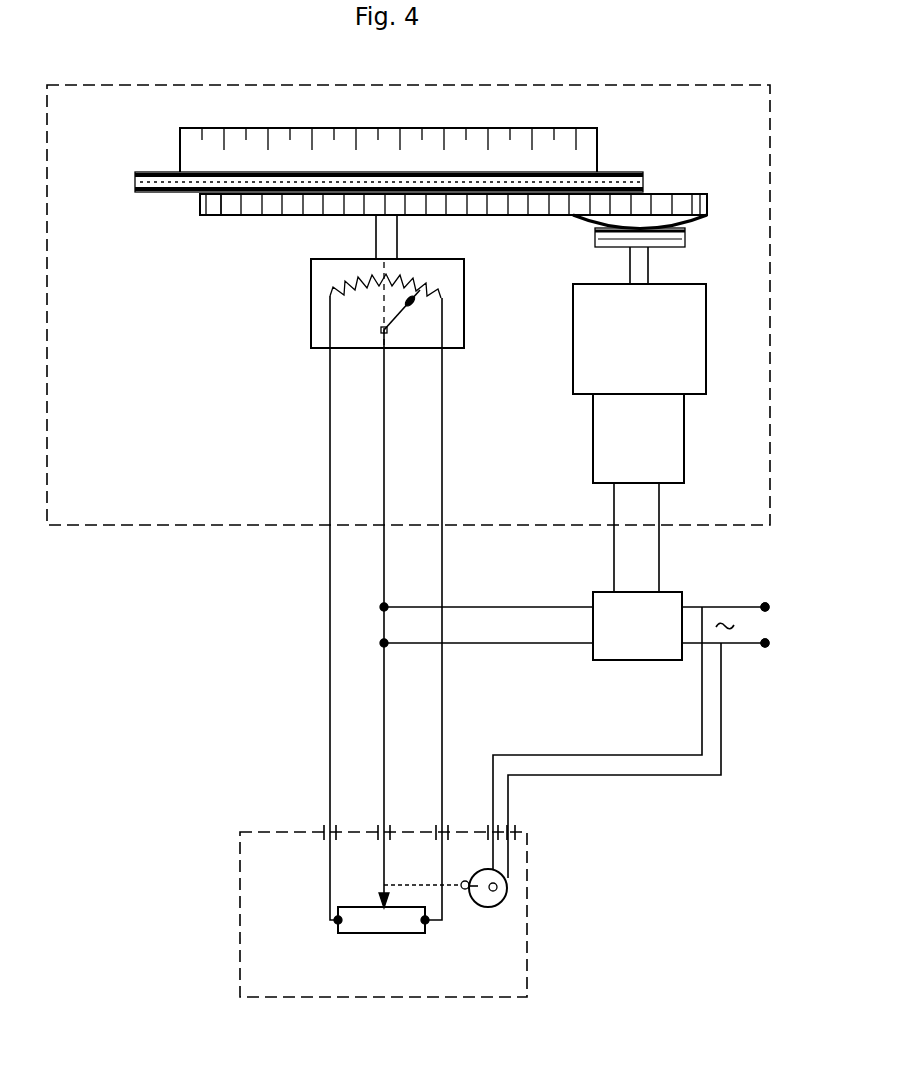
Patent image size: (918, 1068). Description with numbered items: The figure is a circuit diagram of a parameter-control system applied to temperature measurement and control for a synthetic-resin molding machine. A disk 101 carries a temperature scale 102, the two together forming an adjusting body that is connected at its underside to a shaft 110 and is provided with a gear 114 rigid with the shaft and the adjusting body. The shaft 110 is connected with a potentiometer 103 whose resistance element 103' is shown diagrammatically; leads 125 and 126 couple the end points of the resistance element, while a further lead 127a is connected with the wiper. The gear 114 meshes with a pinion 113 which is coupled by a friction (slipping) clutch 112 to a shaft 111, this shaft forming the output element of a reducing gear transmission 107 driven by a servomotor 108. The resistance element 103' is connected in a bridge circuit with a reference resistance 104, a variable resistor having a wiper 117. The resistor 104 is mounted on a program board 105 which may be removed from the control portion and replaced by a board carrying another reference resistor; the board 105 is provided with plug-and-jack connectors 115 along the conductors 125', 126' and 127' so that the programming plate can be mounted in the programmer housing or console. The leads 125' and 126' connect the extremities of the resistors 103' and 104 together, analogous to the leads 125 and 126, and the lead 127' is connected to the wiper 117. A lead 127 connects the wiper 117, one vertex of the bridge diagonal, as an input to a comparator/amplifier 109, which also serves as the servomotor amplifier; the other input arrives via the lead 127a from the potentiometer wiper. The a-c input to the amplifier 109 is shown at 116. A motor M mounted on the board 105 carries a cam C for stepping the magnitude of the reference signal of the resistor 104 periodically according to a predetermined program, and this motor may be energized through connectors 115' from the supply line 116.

The disk 101 is at (583, 182).
The temperature scale 102 is at (233, 143).
The potentiometer 103 is at (353, 303).
The resistance element 103' is at (455, 311).
The reference resistance 104 is at (352, 922).
The program board 105 is at (240, 932).
The gear transmission 107 is at (700, 380).
The servomotor 108 is at (680, 462).
The comparator/amplifier 109 is at (648, 650).
The shaft 110 is at (396, 248).
The shaft 111 is at (655, 270).
The friction clutch 112 is at (692, 237).
The pinion 113 is at (665, 206).
The gear 114 is at (207, 212).
The plug-and-jack connectors 115 is at (360, 818).
The connectors 115' is at (545, 840).
The a-c input 116 is at (747, 625).
The wiper 117 is at (380, 884).
The lead 125 is at (299, 448).
The lead 126 is at (469, 449).
The lead 127 is at (574, 510).
The lead 127a is at (474, 607).
The lead 125' is at (298, 760).
The lead 126' is at (465, 760).
The lead 127' is at (411, 772).
The motor M is at (512, 895).
The cam C is at (490, 893).